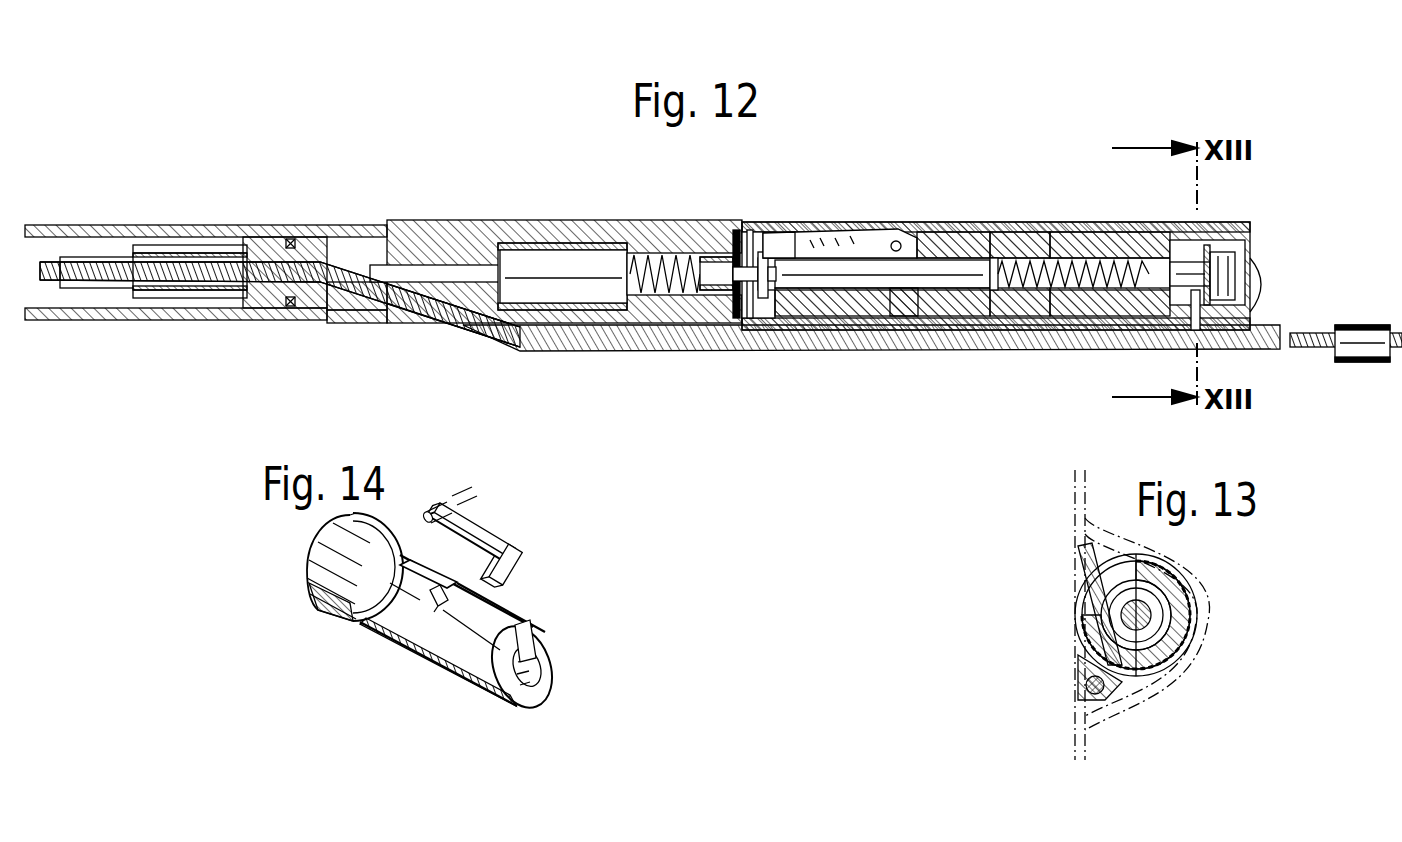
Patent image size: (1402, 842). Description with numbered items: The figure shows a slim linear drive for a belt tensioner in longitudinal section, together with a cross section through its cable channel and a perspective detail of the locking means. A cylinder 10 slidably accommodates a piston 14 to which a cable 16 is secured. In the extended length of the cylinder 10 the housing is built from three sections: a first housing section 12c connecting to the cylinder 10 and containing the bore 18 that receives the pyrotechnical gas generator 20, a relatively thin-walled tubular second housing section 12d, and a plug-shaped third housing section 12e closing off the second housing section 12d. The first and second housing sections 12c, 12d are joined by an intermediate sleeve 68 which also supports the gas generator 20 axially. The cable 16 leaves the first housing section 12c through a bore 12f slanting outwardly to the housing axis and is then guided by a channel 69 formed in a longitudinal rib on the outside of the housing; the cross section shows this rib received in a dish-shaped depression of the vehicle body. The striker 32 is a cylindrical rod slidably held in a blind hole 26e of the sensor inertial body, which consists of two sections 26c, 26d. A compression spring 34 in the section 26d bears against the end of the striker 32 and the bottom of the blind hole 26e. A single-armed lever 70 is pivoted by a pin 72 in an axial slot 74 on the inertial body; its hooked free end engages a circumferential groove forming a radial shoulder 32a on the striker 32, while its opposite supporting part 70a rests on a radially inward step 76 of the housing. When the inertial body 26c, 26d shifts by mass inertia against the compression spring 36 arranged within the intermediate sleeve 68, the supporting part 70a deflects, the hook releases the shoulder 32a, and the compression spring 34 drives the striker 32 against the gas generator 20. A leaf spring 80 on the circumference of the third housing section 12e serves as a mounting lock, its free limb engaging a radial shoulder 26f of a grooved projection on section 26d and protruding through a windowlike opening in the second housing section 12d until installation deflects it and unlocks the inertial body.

In FIG. 12, the cylinder 10 is at (160, 225).
In FIG. 12, the piston 14 is at (280, 238).
In FIG. 12, the cable 16 is at (705, 332).
In FIG. 13, the cable 16 is at (1084, 698).
In FIG. 12, the bore 18 is at (524, 246).
In FIG. 12, the gas generator 20 is at (585, 262).
In FIG. 12, the first housing section 12c is at (444, 238).
In FIG. 12, the second housing section 12d is at (977, 230).
In FIG. 12, the third housing section 12e is at (1262, 292).
In FIG. 12, the bore 12f is at (438, 306).
In FIG. 12, the sensor inertial body section 26c is at (848, 300).
In FIG. 14, the sensor inertial body section 26c is at (322, 600).
In FIG. 12, the sensor inertial body section 26d is at (1072, 300).
In FIG. 12, the blind hole 26e is at (1008, 300).
In FIG. 12, the radial shoulder 26f is at (1192, 240).
In FIG. 12, the striker 32 is at (838, 262).
In FIG. 12, the radial shoulder 32a is at (770, 300).
In FIG. 12, the compression spring 34 is at (1062, 262).
In FIG. 12, the compression spring 36 is at (668, 252).
In FIG. 12, the intermediate sleeve 68 is at (672, 320).
In FIG. 13, the channel 69 is at (1086, 682).
In FIG. 12, the lever 70 is at (872, 240).
In FIG. 14, the lever 70 is at (496, 525).
In FIG. 12, the supporting part 70a is at (786, 240).
In FIG. 14, the supporting part 70a is at (522, 529).
In FIG. 12, the pin 72 is at (898, 244).
In FIG. 14, the pin 72 is at (473, 492).
In FIG. 12, the axial slot 74 is at (905, 300).
In FIG. 14, the axial slot 74 is at (526, 628).
In FIG. 12, the step 76 is at (758, 228).
In FIG. 12, the leaf spring 80 is at (1194, 330).
In FIG. 13, the leaf spring 80 is at (1086, 560).